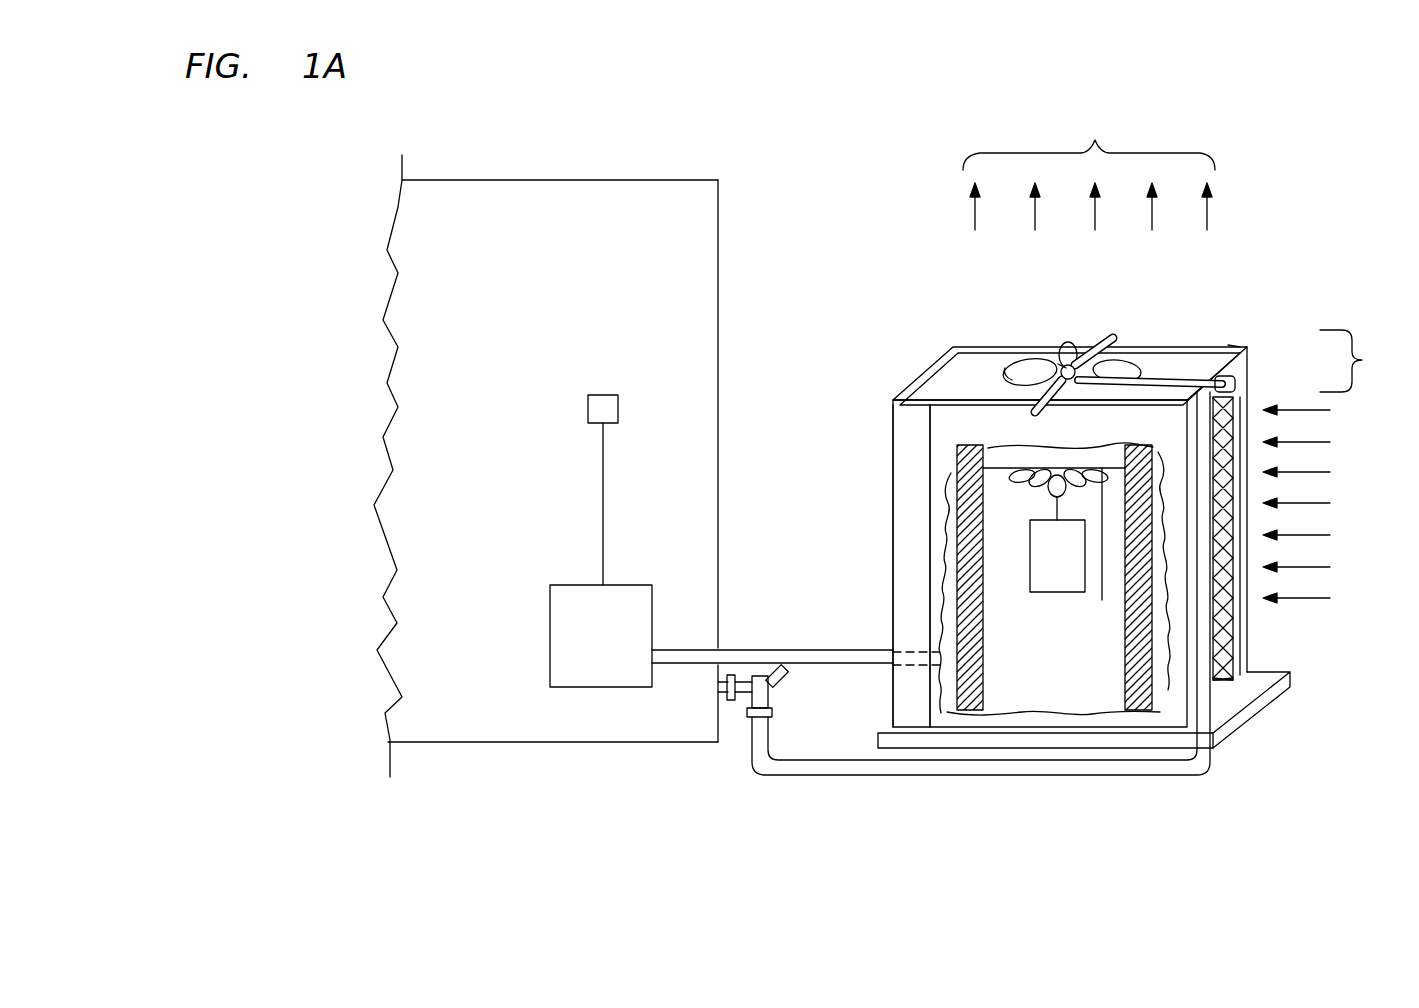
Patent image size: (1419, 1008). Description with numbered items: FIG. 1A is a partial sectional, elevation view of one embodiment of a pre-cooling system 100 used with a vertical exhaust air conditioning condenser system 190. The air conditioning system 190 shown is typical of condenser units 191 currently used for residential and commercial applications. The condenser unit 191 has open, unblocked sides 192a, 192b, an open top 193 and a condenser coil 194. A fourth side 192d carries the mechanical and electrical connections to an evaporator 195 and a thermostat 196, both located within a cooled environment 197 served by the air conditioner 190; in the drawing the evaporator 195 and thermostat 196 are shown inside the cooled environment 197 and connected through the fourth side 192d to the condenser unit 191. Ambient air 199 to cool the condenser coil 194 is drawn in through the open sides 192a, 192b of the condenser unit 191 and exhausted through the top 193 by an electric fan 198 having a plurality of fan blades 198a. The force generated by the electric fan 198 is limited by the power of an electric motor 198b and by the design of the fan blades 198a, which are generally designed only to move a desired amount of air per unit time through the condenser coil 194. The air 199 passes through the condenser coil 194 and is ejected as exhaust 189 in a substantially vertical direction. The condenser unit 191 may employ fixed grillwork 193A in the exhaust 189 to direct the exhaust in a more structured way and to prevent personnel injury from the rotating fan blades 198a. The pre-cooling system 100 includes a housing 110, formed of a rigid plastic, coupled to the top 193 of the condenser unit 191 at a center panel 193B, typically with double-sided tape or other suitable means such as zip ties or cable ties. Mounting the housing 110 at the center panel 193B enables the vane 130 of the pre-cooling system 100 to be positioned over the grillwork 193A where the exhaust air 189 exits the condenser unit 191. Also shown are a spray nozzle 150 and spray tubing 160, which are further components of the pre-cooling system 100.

The pre-cooling system 100 is at (1361, 361).
The housing 110 is at (1072, 362).
The vane 130 is at (1008, 368).
The spray nozzle 150 is at (1113, 335).
The spray tubing 160 is at (1168, 375).
The exhaust 189 is at (1089, 165).
The vertical exhaust air conditioning condenser system 190 is at (852, 180).
The condenser unit 191 is at (957, 830).
The open side 192a is at (960, 462).
The open side 192b is at (1245, 652).
The fourth side 192d is at (883, 590).
The open top 193 is at (922, 343).
The fixed grillwork 193A is at (1228, 345).
The center panel 193B is at (1062, 365).
The condenser coil 194 is at (1128, 688).
The evaporator 195 is at (550, 612).
The thermostat 196 is at (588, 405).
The cooled environment 197 is at (538, 243).
The electric fan 198 is at (977, 560).
The fan blades 198a is at (1102, 600).
The electric motor 198b is at (1043, 568).
The ambient air 199 is at (1323, 504).